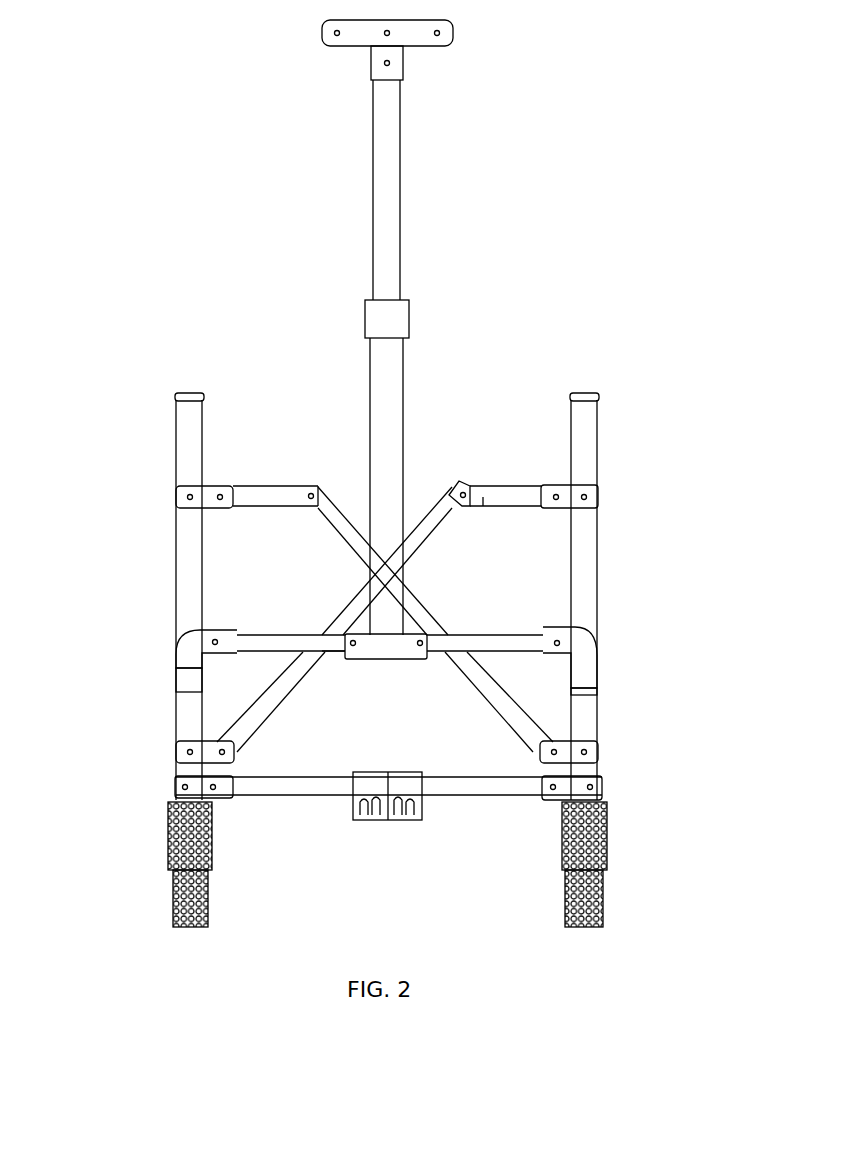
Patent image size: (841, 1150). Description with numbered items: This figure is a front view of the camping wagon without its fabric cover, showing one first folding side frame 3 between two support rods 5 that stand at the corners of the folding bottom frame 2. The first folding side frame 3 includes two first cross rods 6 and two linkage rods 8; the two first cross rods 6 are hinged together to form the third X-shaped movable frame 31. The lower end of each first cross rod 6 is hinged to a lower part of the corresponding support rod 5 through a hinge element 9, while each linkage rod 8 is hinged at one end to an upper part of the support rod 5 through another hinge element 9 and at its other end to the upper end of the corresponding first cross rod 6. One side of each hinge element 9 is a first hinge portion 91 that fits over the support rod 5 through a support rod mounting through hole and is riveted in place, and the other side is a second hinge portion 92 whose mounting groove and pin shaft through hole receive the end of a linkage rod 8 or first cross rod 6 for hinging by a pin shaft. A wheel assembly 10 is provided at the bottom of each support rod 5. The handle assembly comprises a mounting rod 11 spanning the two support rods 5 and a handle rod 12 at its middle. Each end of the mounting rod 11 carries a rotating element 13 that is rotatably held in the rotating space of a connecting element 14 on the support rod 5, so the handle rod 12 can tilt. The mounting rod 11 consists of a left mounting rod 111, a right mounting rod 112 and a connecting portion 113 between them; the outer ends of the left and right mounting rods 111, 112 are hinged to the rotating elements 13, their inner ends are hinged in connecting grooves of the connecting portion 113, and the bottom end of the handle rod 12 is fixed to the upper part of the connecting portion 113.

The folding bottom frame 2 is at (453, 790).
The first folding side frame 3 is at (483, 497).
The support rod 5 is at (583, 586).
The first cross rod 6 is at (273, 695).
The linkage rod 8 is at (261, 486).
The hinge element 9 is at (183, 495).
The wheel assembly 10 is at (172, 870).
The mounting rod 11 is at (357, 652).
The handle rod 12 is at (385, 397).
The rotating element 13 is at (197, 652).
The connecting element 14 is at (177, 673).
The third X-shaped movable frame 31 is at (418, 528).
The first hinge portion 91 is at (592, 490).
The second hinge portion 92 is at (548, 490).
The left mounting rod 111 is at (288, 645).
The right mounting rod 112 is at (498, 645).
The connecting portion 113 is at (390, 647).